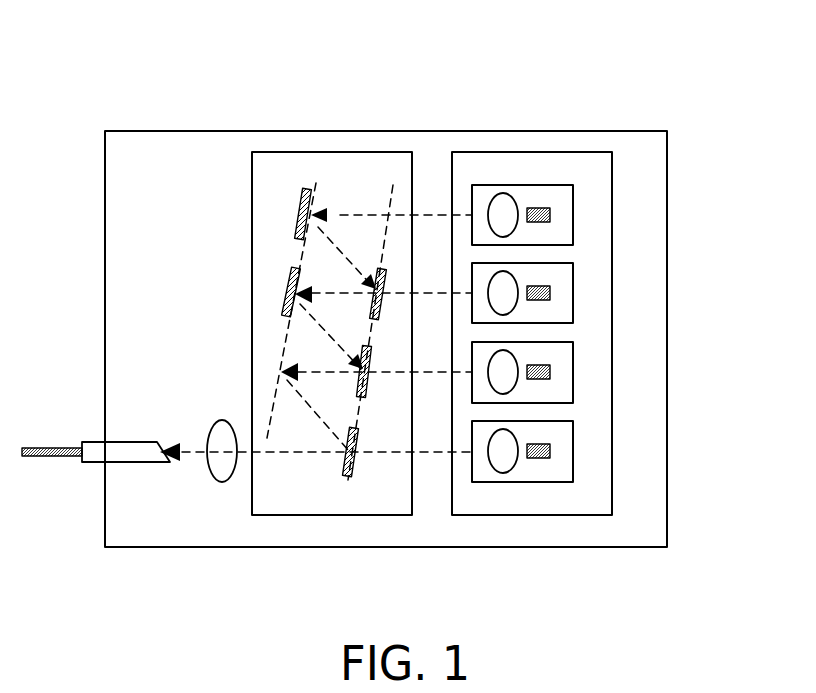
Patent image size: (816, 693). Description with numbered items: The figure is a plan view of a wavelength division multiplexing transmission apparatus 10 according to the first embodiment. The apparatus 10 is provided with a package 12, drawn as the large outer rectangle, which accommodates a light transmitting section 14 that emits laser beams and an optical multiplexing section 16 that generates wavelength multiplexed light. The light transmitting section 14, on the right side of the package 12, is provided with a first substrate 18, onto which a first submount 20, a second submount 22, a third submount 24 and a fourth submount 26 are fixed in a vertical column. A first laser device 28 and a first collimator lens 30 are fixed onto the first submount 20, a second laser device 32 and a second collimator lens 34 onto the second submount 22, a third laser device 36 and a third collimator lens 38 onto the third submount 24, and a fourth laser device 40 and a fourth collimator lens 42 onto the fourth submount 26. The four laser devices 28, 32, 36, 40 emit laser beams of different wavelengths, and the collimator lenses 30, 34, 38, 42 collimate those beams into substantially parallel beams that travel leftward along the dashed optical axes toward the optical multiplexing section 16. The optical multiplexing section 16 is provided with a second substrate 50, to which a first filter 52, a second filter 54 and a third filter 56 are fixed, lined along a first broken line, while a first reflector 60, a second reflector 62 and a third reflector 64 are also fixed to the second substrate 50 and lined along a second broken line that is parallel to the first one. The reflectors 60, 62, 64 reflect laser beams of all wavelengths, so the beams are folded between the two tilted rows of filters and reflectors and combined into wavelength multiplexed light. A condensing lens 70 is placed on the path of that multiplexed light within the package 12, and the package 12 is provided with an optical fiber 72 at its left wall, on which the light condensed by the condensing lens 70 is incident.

The wavelength division multiplexing transmission apparatus 10 is at (43, 78).
The package 12 is at (113, 158).
The light transmitting section 14 is at (733, 95).
The optical multiplexing section 16 is at (577, 68).
The first substrate 18 is at (572, 510).
The first submount 20 is at (565, 424).
The second submount 22 is at (565, 345).
The third submount 24 is at (565, 266).
The fourth submount 26 is at (528, 185).
The first laser device 28 is at (538, 458).
The first collimator lens 30 is at (516, 434).
The second laser device 32 is at (550, 372).
The second collimator lens 34 is at (516, 362).
The third laser device 36 is at (550, 292).
The third collimator lens 38 is at (516, 283).
The fourth laser device 40 is at (550, 214).
The fourth collimator lens 42 is at (516, 206).
The second substrate 50 is at (253, 267).
The first filter 52 is at (360, 428).
The second filter 54 is at (370, 363).
The third filter 56 is at (383, 268).
The first reflector 60 is at (252, 243).
The second reflector 62 is at (294, 268).
The third reflector 64 is at (303, 190).
The condensing lens 70 is at (223, 420).
The optical fiber 72 is at (95, 442).